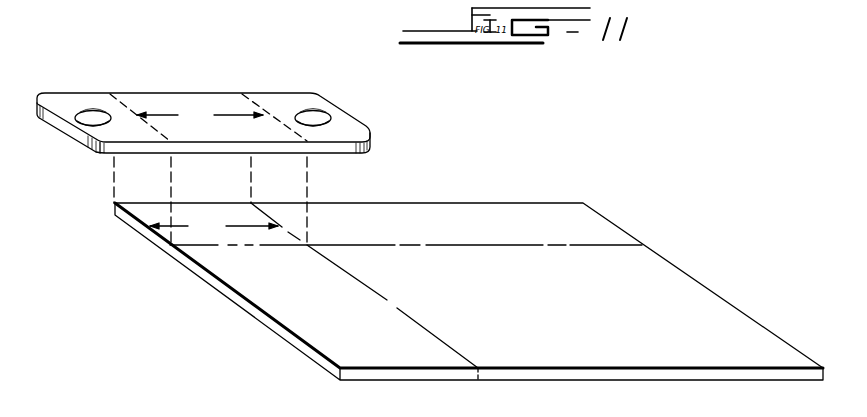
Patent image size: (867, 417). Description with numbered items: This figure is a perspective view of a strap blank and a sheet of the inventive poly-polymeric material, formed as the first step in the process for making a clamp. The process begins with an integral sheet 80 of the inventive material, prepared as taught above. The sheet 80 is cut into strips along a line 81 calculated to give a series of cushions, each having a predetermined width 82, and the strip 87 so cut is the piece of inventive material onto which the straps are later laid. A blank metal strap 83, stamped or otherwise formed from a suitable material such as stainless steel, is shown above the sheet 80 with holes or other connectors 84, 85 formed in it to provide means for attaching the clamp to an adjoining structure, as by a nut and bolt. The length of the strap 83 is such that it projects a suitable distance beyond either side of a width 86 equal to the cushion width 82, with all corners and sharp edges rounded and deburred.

The integral sheet 80 is at (723, 303).
The line 81 is at (617, 247).
The predetermined width 82 is at (214, 226).
The blank metal strap 83 is at (228, 103).
The hole 84 is at (92, 112).
The hole 85 is at (328, 113).
The width 86 is at (200, 115).
The strip 87 is at (452, 215).